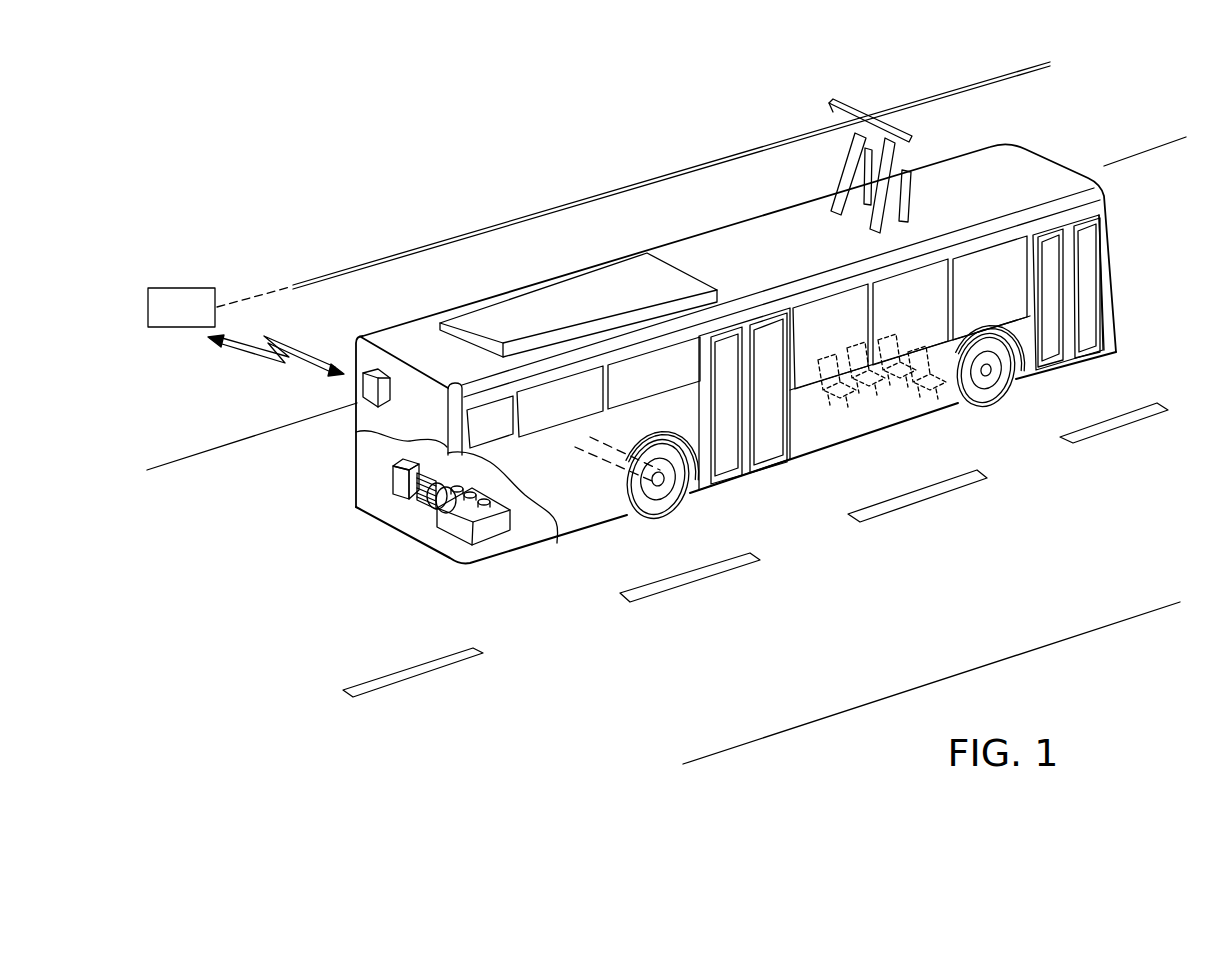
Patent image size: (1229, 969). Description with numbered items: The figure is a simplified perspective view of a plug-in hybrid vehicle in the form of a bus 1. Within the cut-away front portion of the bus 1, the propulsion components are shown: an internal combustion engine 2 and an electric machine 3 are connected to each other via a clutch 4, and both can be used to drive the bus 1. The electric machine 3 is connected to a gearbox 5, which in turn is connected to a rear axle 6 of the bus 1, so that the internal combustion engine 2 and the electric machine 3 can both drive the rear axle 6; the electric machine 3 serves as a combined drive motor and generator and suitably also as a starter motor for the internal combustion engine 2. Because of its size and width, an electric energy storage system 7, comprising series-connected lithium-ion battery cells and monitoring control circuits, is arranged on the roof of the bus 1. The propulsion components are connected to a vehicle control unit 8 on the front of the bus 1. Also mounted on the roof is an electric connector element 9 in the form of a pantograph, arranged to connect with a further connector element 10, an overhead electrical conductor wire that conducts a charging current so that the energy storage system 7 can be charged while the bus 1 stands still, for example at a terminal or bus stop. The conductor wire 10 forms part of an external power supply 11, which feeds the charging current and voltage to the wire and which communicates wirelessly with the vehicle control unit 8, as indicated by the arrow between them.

The bus 1 is at (699, 353).
The internal combustion engine 2 is at (455, 527).
The electric machine 3 is at (412, 507).
The clutch 4 is at (430, 510).
The gearbox 5 is at (397, 484).
The rear axle 6 is at (598, 457).
The electric energy storage system 7 is at (543, 298).
The vehicle control unit 8 is at (372, 388).
The electric connector element 9 is at (850, 170).
The further connector element 10 is at (650, 178).
The external power supply 11 is at (246, 331).